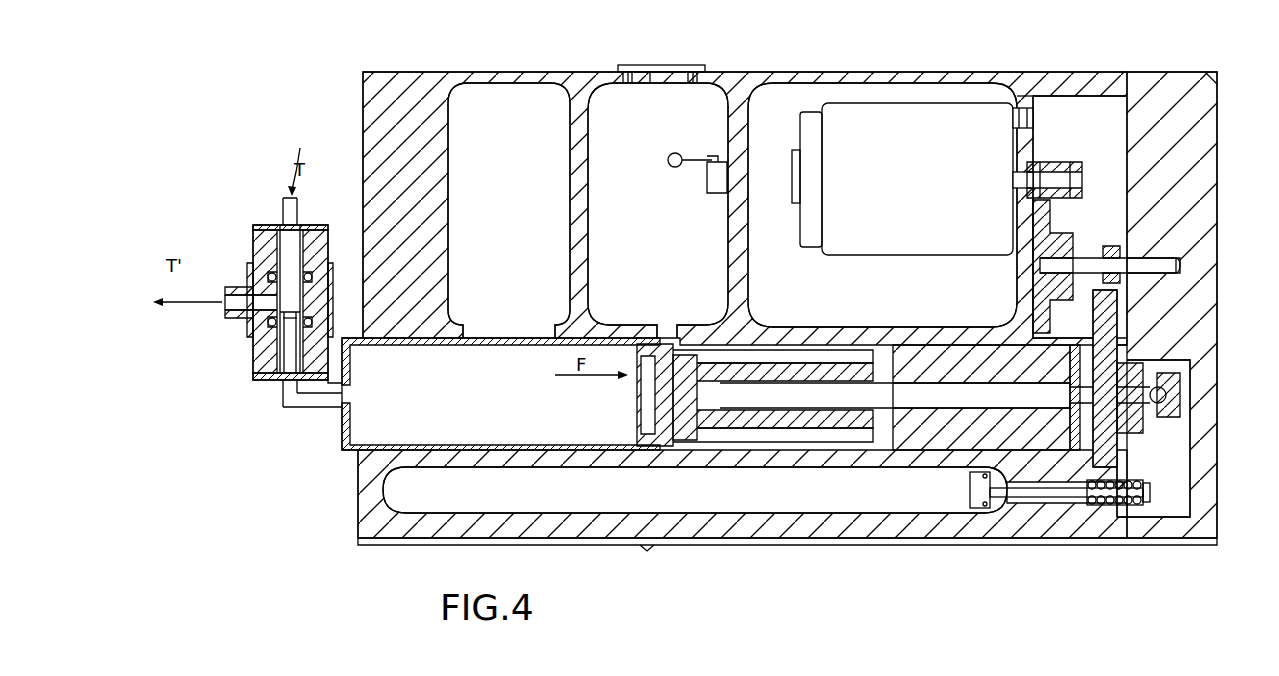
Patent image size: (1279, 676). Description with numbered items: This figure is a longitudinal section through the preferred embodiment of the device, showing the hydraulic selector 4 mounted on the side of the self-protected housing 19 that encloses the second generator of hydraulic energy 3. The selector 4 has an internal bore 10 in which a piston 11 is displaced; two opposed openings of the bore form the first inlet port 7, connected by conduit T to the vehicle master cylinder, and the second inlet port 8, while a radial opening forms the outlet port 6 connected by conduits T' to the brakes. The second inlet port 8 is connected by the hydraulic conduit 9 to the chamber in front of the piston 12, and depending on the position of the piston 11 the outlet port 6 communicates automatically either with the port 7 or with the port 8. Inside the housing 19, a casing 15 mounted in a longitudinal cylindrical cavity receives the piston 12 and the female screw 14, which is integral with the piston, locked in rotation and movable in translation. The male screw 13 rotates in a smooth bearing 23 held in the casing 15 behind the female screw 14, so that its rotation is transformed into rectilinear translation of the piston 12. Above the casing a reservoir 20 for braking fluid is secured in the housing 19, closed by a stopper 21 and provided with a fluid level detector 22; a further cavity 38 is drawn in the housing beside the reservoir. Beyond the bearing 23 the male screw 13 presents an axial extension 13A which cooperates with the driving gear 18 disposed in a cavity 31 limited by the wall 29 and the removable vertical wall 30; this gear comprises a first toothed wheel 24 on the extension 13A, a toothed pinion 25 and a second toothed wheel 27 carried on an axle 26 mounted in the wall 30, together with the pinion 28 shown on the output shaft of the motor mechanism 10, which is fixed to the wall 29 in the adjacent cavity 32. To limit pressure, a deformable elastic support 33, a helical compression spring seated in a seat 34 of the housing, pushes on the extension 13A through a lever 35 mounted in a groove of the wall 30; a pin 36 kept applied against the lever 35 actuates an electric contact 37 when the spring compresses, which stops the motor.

The second generator of hydraulic energy 3 is at (779, 325).
The hydraulic selector 4 is at (253, 240).
The outlet port 6 is at (246, 312).
The first inlet port 7 is at (315, 226).
The second inlet port 8 is at (290, 378).
The hydraulic conduit 9 is at (310, 400).
The motor mechanism 10 is at (932, 113).
The piston 11 is at (278, 358).
The piston 12 is at (660, 435).
The male screw 13 is at (778, 402).
The axial extension 13A is at (1132, 393).
The female screw 14 is at (922, 452).
The casing 15 is at (540, 458).
The driving gear 18 is at (1102, 232).
The self-protected housing 19 is at (1069, 68).
The reservoir 20 is at (670, 222).
The stopper 21 is at (668, 70).
The fluid level detector 22 is at (713, 178).
The smooth bearing 23 is at (1096, 468).
The first toothed wheel 24 is at (1145, 421).
The toothed pinion 25 is at (1122, 258).
The axle 26 is at (1181, 272).
The second toothed wheel 27 is at (1052, 215).
The pinion 28 is at (1082, 163).
The wall 29 is at (1027, 100).
The removable vertical wall 30 is at (1218, 73).
The cavity 31 is at (1102, 108).
The cavity 32 is at (795, 97).
The deformable elastic support 33 is at (1141, 505).
The seat 34 is at (1115, 505).
The lever 35 is at (1191, 462).
The pin 36 is at (1030, 497).
The electric contact 37 is at (985, 508).
The chamber 38 is at (480, 98).